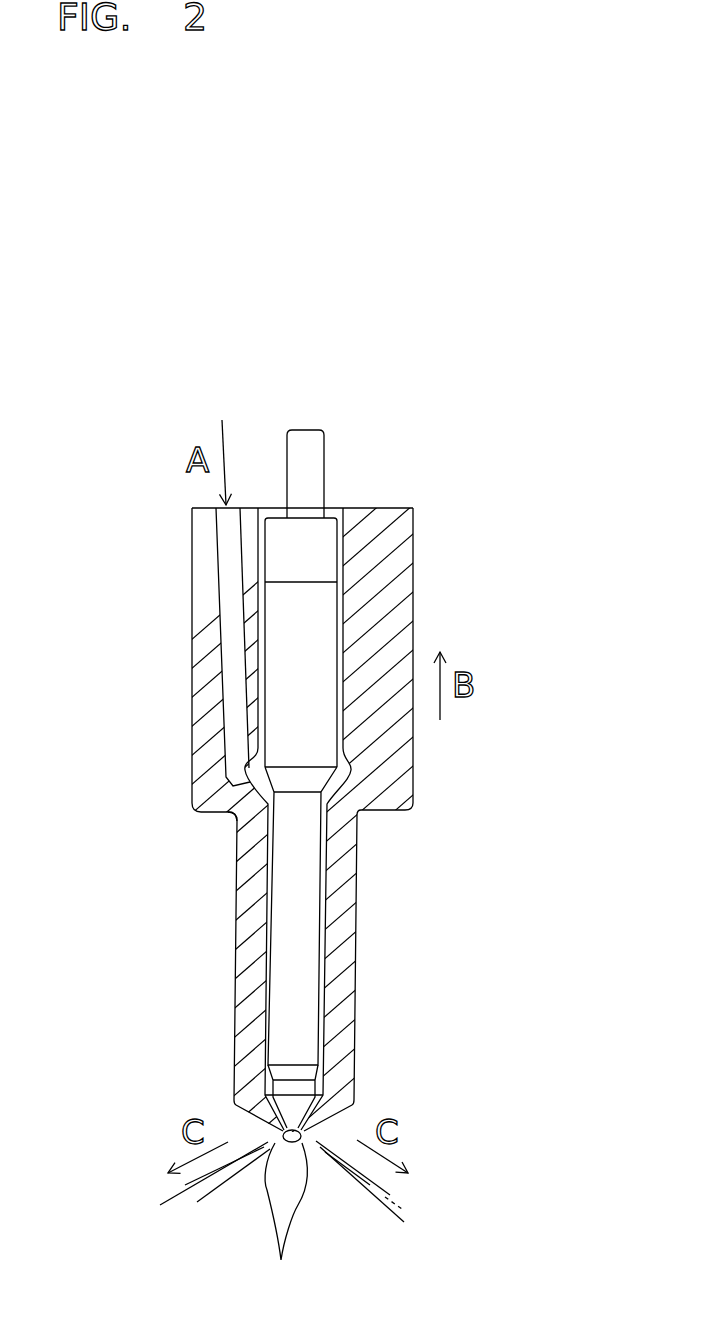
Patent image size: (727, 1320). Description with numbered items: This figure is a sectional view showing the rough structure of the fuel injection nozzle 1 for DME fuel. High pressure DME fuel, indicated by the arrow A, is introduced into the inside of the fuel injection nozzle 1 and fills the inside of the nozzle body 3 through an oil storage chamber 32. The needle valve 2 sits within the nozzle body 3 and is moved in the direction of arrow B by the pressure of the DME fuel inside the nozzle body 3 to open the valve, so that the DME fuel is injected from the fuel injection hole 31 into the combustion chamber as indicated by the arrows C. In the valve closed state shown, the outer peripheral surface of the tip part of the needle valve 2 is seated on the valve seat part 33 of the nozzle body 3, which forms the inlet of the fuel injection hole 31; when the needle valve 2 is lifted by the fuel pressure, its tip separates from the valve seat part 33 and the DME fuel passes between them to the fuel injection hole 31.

The fuel injection nozzle 1 is at (447, 448).
The needle valve 2 is at (312, 628).
The nozzle body 3 is at (190, 663).
The fuel injection hole 31 is at (282, 1227).
The oil storage chamber 32 is at (227, 817).
The valve seat part 33 is at (323, 1105).